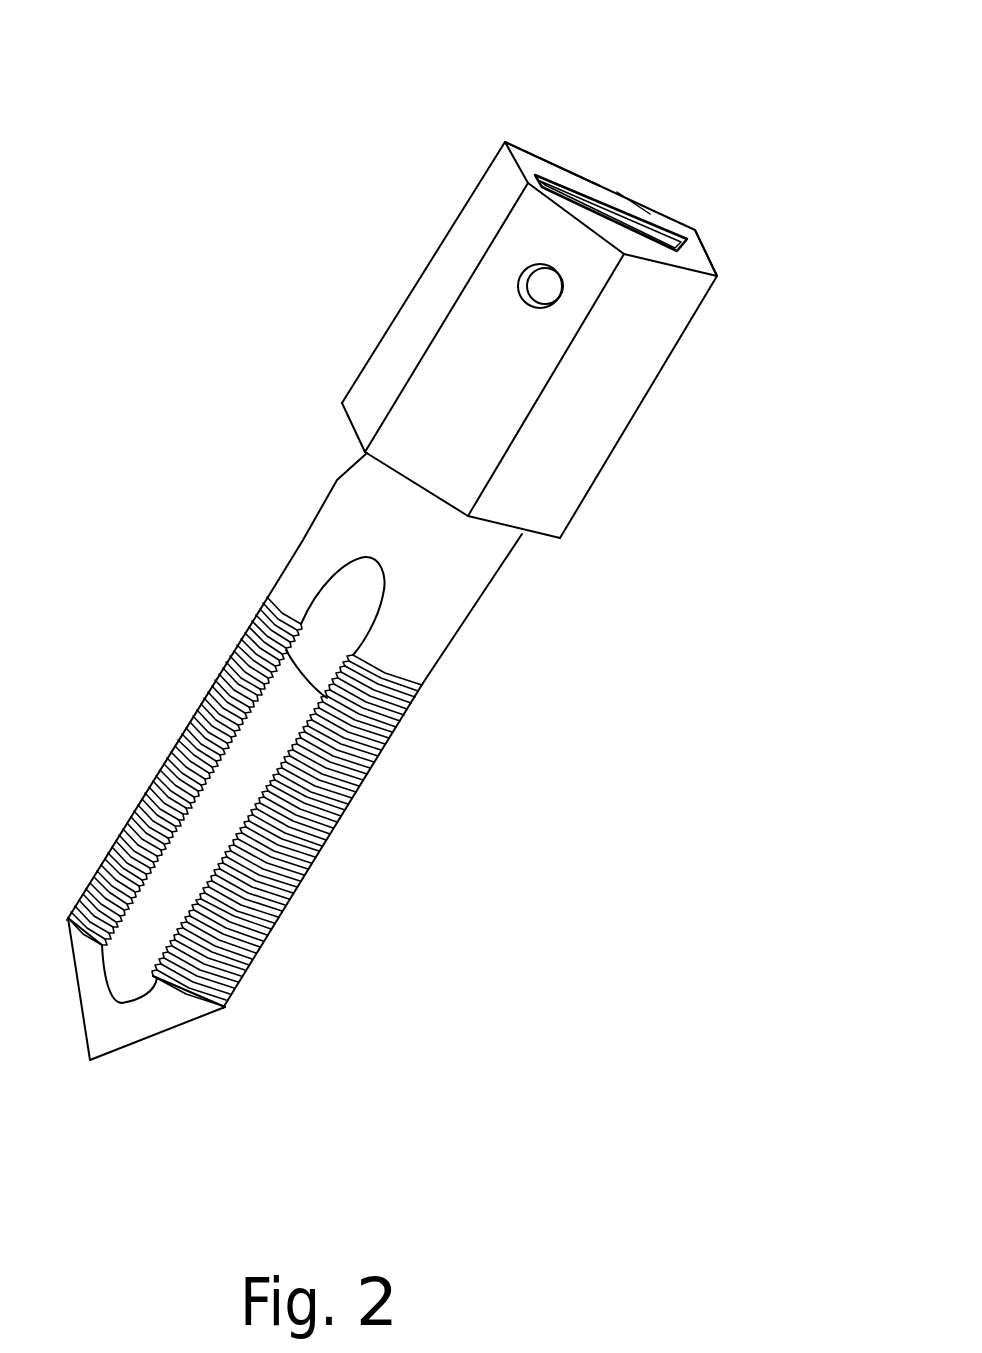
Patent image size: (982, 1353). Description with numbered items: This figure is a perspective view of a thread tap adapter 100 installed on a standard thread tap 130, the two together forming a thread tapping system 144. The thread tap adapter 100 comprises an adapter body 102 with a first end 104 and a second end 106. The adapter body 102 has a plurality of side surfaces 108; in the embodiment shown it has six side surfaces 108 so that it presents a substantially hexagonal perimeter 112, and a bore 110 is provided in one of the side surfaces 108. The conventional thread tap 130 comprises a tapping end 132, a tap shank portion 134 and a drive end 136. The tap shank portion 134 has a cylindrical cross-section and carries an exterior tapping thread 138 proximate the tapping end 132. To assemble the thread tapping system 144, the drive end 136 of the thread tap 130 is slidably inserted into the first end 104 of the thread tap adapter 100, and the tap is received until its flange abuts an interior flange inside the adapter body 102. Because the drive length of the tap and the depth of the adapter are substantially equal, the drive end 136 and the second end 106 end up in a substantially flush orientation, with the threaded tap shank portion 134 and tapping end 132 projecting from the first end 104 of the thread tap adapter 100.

The thread tap adapter 100 is at (668, 360).
The adapter body 102 is at (580, 500).
The first end 104 is at (560, 540).
The second end 106 is at (703, 263).
The side surfaces 108 is at (563, 147).
The bore 110 is at (516, 288).
The hexagonal perimeter 112 is at (537, 140).
The thread tap 130 is at (292, 557).
The tapping end 132 is at (125, 1028).
The tap shank portion 134 is at (447, 630).
The drive end 136 is at (578, 187).
The exterior tapping thread 138 is at (318, 860).
The thread tapping system 144 is at (645, 760).